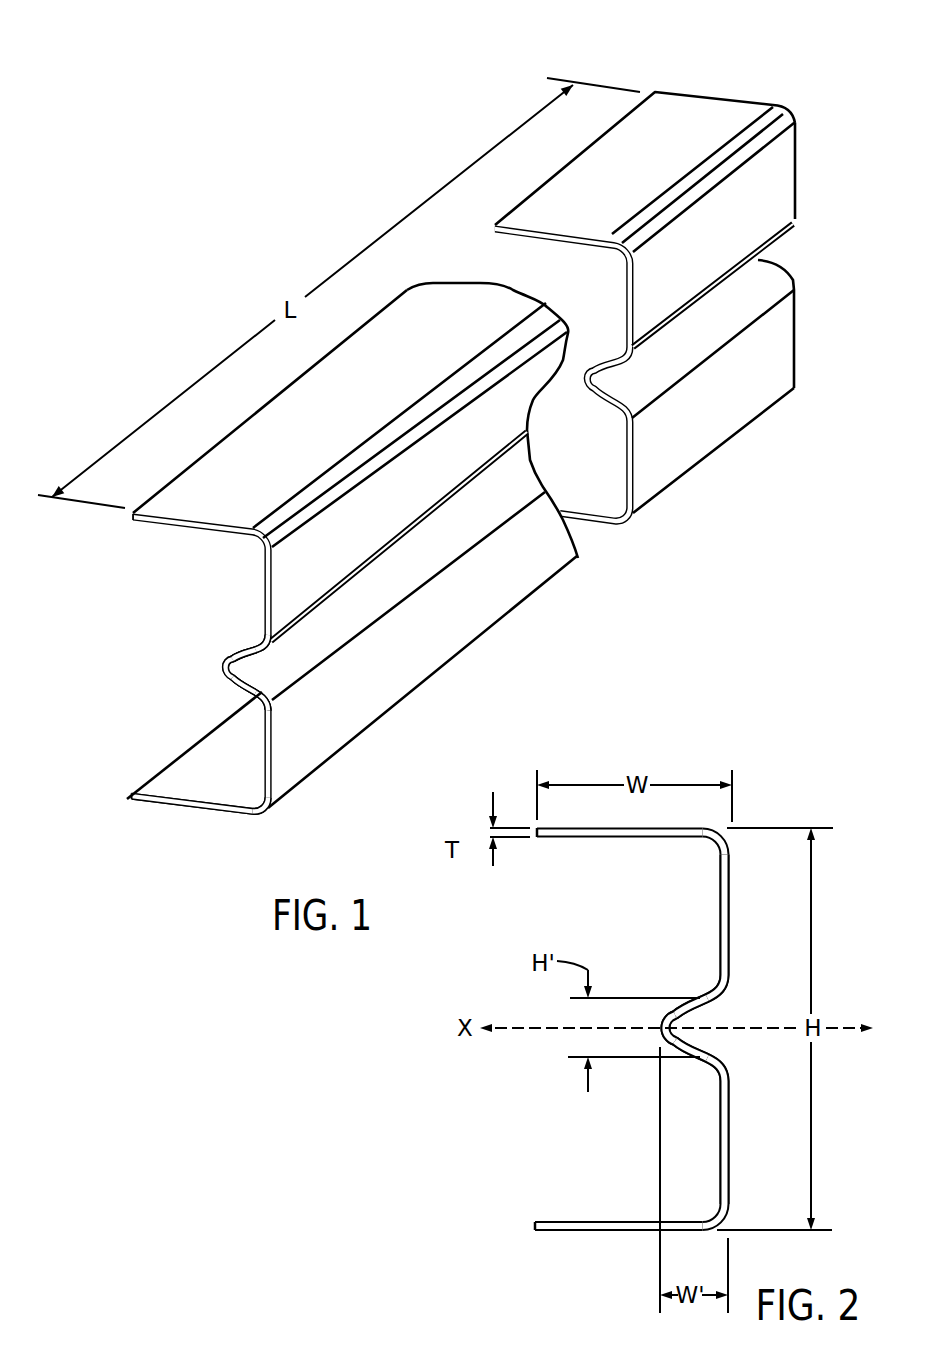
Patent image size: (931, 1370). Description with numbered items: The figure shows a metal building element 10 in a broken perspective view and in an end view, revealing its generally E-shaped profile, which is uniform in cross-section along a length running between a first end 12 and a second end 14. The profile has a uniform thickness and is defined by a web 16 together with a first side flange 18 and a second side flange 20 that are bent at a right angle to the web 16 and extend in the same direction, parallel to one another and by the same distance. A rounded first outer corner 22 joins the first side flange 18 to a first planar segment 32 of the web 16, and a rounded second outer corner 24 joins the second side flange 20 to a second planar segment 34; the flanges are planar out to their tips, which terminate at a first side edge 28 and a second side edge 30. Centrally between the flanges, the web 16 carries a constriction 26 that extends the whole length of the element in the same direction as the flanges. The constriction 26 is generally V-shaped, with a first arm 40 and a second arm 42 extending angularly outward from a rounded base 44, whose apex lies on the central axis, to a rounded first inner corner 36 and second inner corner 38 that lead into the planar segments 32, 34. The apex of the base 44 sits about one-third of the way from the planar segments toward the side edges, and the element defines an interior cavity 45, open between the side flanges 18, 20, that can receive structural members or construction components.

In FIG. 1, the building element 10 is at (675, 67).
In FIG. 2, the building element 10 is at (756, 788).
In FIG. 1, the first end 12 is at (172, 525).
In FIG. 1, the second end 14 is at (722, 97).
In FIG. 1, the web 16 is at (780, 165).
In FIG. 2, the web 16 is at (748, 890).
In FIG. 1, the first side flange 18 is at (264, 426).
In FIG. 2, the first side flange 18 is at (566, 818).
In FIG. 1, the second side flange 20 is at (187, 825).
In FIG. 2, the second side flange 20 is at (555, 1204).
In FIG. 1, the first outer corner 22 is at (784, 106).
In FIG. 2, the first outer corner 22 is at (724, 837).
In FIG. 1, the second outer corner 24 is at (270, 812).
In FIG. 2, the second outer corner 24 is at (717, 1223).
In FIG. 1, the constriction 26 is at (207, 672).
In FIG. 1, the first side edge 28 is at (125, 513).
In FIG. 2, the first side edge 28 is at (534, 833).
In FIG. 1, the second side edge 30 is at (126, 800).
In FIG. 2, the second side edge 30 is at (535, 1227).
In FIG. 1, the first planar segment 32 is at (763, 211).
In FIG. 2, the first planar segment 32 is at (735, 931).
In FIG. 1, the second planar segment 34 is at (450, 633).
In FIG. 2, the second planar segment 34 is at (730, 1132).
In FIG. 1, the first inner corner 36 is at (428, 543).
In FIG. 2, the first inner corner 36 is at (727, 987).
In FIG. 1, the second inner corner 38 is at (274, 702).
In FIG. 2, the second inner corner 38 is at (722, 1060).
In FIG. 1, the first arm 40 is at (243, 647).
In FIG. 2, the first arm 40 is at (683, 1004).
In FIG. 1, the second arm 42 is at (230, 688).
In FIG. 2, the second arm 42 is at (688, 1056).
In FIG. 2, the base 44 is at (660, 1027).
In FIG. 2, the interior cavity 45 is at (584, 904).